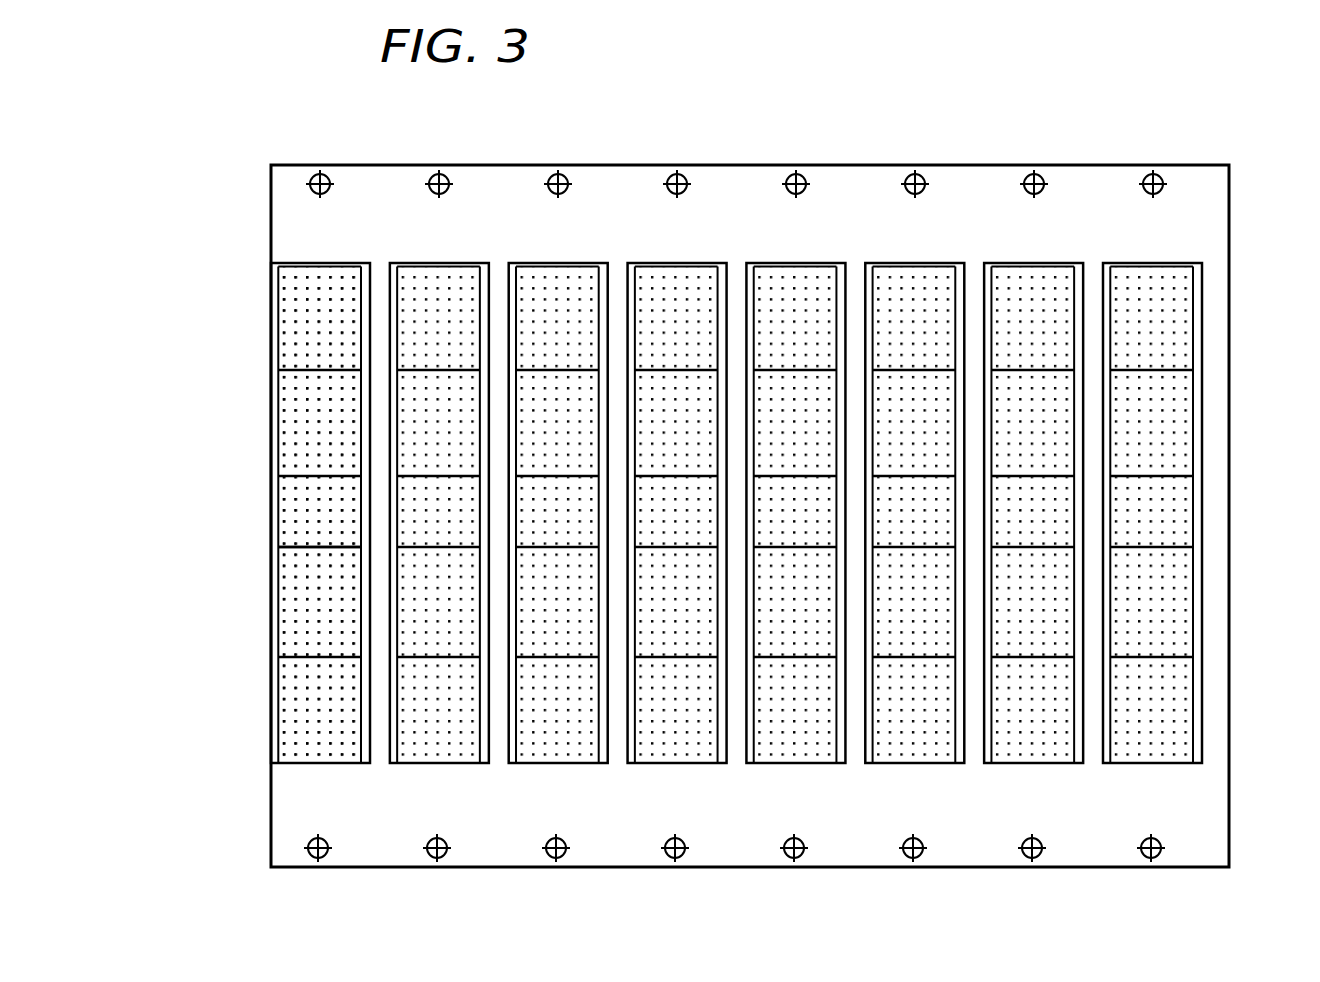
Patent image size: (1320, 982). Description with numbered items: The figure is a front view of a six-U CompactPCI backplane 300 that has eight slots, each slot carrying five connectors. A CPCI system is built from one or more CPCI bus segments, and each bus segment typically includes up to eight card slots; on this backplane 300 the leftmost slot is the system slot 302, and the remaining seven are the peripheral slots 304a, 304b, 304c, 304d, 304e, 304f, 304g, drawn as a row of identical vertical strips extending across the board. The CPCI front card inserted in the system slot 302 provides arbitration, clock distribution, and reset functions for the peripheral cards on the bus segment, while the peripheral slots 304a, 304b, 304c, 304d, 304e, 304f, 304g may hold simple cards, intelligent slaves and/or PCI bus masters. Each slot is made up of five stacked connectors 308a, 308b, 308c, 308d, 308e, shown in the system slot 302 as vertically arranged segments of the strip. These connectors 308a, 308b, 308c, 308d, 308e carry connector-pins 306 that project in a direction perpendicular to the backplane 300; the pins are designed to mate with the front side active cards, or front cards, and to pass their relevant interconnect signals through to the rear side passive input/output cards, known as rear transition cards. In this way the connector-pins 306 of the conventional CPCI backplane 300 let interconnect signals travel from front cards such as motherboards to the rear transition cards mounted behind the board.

The backplane 300 is at (1230, 205).
The system slot 302 is at (319, 263).
The peripheral slot 304a is at (410, 763).
The peripheral slot 304b is at (548, 589).
The peripheral slot 304c is at (667, 589).
The peripheral slot 304d is at (785, 589).
The peripheral slot 304e is at (904, 589).
The peripheral slot 304f is at (1023, 589).
The peripheral slot 304g is at (1142, 589).
The connector-pins 306 is at (295, 547).
The connector 308a is at (271, 713).
The connector 308b is at (271, 632).
The connector 308c is at (271, 513).
The connector 308d is at (271, 397).
The connector 308e is at (271, 313).